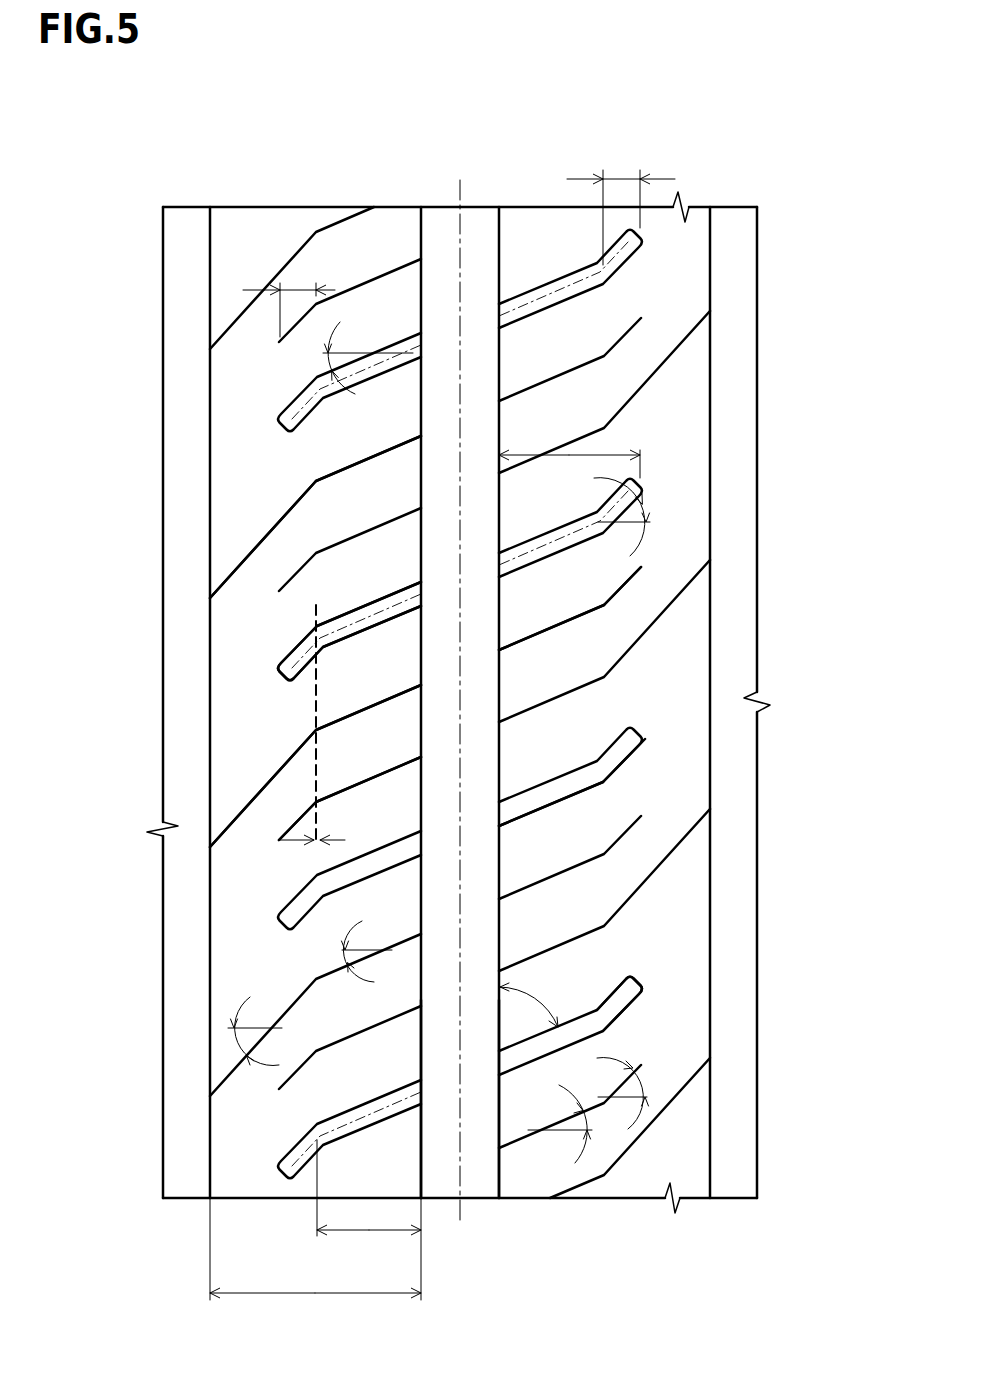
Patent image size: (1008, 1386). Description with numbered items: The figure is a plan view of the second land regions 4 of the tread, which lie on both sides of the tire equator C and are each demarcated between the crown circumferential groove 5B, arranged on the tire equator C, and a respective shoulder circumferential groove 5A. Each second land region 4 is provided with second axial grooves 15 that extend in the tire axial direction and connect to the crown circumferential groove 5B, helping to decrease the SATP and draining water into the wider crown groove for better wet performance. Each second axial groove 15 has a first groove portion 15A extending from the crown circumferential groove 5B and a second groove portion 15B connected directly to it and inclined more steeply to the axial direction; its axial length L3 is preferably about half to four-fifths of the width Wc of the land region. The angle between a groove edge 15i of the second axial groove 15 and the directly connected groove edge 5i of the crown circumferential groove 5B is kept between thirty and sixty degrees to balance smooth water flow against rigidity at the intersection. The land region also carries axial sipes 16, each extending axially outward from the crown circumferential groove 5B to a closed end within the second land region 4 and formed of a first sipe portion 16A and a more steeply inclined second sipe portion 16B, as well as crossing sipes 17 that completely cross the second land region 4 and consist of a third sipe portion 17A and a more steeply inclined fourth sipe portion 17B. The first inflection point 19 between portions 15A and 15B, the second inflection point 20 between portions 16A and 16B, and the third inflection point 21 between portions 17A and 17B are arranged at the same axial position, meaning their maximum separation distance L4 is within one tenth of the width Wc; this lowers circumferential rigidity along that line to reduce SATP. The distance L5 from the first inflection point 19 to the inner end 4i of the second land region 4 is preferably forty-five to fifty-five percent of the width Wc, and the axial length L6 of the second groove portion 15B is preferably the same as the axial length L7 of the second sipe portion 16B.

The shoulder circumferential groove 5A is at (185, 241).
The crown circumferential groove 5B is at (481, 241).
The second land region 4 is at (246, 241).
The inner end of the second land region 4i is at (422, 1133).
The groove edge of the crown circumferential groove 5i is at (500, 1105).
The tire equator C is at (461, 688).
The second axial groove 15 is at (330, 370).
The first groove portion 15A is at (558, 788).
The second groove portion 15B is at (622, 750).
The groove edge of the second axial groove 15i is at (612, 968).
The axial sipe 16 is at (837, 573).
The first sipe portion 16A is at (565, 627).
The second sipe portion 16B is at (623, 587).
The crossing sipe 17 is at (82, 447).
The third sipe portion 17A is at (362, 457).
The fourth sipe portion 17B is at (258, 545).
The first inflection point 19 is at (305, 620).
The second inflection point 20 is at (306, 793).
The third inflection point 21 is at (305, 720).
The length of the second axial groove L3 is at (600, 455).
The maximum separation distance L4 is at (316, 852).
The distance between first inflection point and inner end L5 is at (369, 1203).
The length of the second groove portion L6 is at (621, 207).
The length of the second sipe portion L7 is at (300, 288).
The width of the second land region Wc is at (315, 1263).